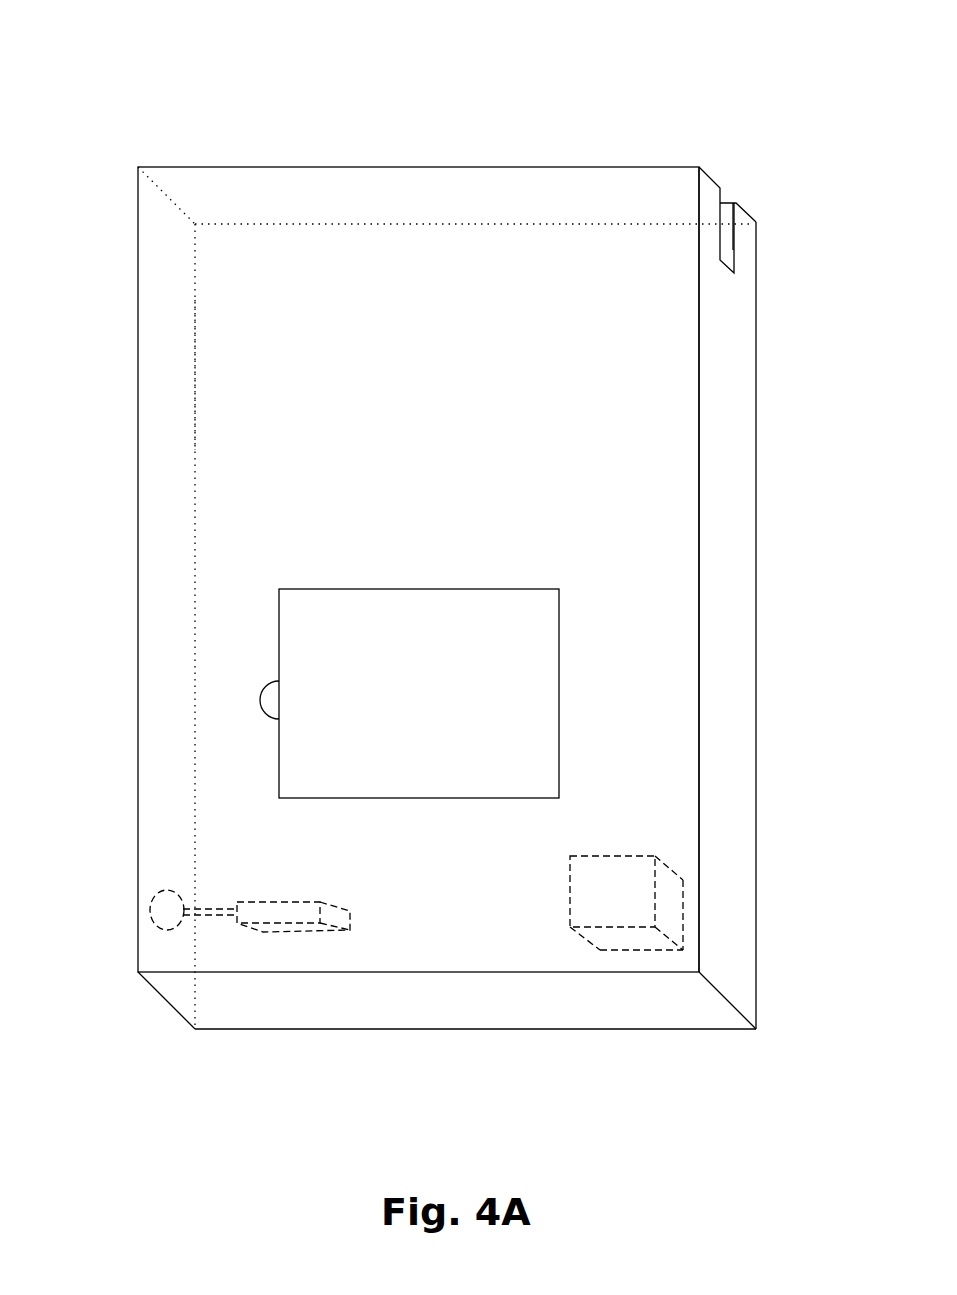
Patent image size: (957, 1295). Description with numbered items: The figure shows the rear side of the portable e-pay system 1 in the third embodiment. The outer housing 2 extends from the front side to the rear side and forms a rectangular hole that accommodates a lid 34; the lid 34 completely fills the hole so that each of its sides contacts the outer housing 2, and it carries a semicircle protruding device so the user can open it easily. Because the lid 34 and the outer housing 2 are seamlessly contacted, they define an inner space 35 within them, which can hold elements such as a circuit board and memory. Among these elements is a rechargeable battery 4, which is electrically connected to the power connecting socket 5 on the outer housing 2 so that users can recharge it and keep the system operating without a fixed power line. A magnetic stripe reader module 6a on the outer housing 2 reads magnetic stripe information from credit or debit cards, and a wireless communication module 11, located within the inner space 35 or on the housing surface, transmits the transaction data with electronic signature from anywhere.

The portable e-pay system 1 is at (415, 167).
The outer housing 2 is at (691, 455).
The rechargeable battery 4 is at (293, 932).
The power connecting socket 5 is at (160, 910).
The magnetic stripe reader module 6a is at (723, 232).
The wireless communication module 11 is at (618, 944).
The lid 34 is at (467, 672).
The inner space 35 is at (233, 370).